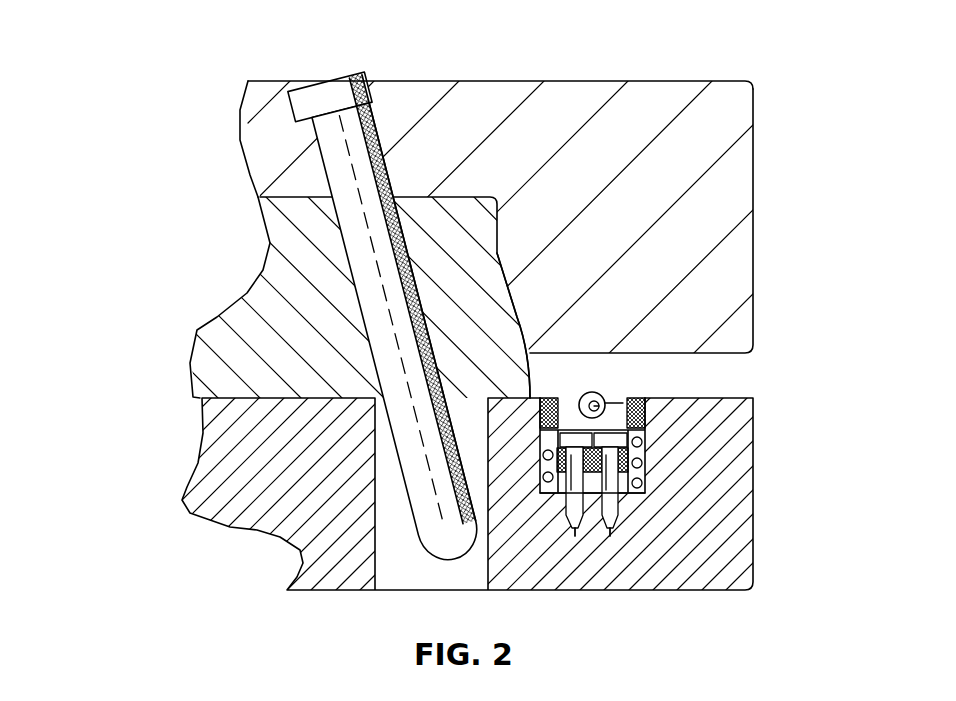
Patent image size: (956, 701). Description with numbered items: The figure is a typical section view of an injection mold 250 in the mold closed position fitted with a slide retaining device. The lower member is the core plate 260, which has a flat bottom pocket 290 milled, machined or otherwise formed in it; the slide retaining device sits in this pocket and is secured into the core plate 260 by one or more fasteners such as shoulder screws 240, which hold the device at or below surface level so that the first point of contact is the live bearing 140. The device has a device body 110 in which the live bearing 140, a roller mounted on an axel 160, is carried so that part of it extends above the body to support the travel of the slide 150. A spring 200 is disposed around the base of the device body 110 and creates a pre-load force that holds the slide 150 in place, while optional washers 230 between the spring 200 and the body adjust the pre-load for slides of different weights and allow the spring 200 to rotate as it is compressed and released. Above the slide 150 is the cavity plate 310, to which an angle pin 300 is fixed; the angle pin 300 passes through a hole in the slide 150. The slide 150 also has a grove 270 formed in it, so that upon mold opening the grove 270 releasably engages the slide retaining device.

The device body 110 is at (606, 405).
The live bearing 140 is at (600, 393).
The slide 150 is at (222, 345).
The axel 160 is at (627, 398).
The spring 200 is at (647, 472).
The washers 230 is at (647, 433).
The shoulder screws 240 is at (620, 497).
The injection mold 250 is at (398, 301).
The core plate 260 is at (217, 423).
The grove 270 is at (530, 353).
The flat bottom pocket 290 is at (647, 488).
The angle pin 300 is at (334, 101).
The cavity plate 310 is at (483, 113).